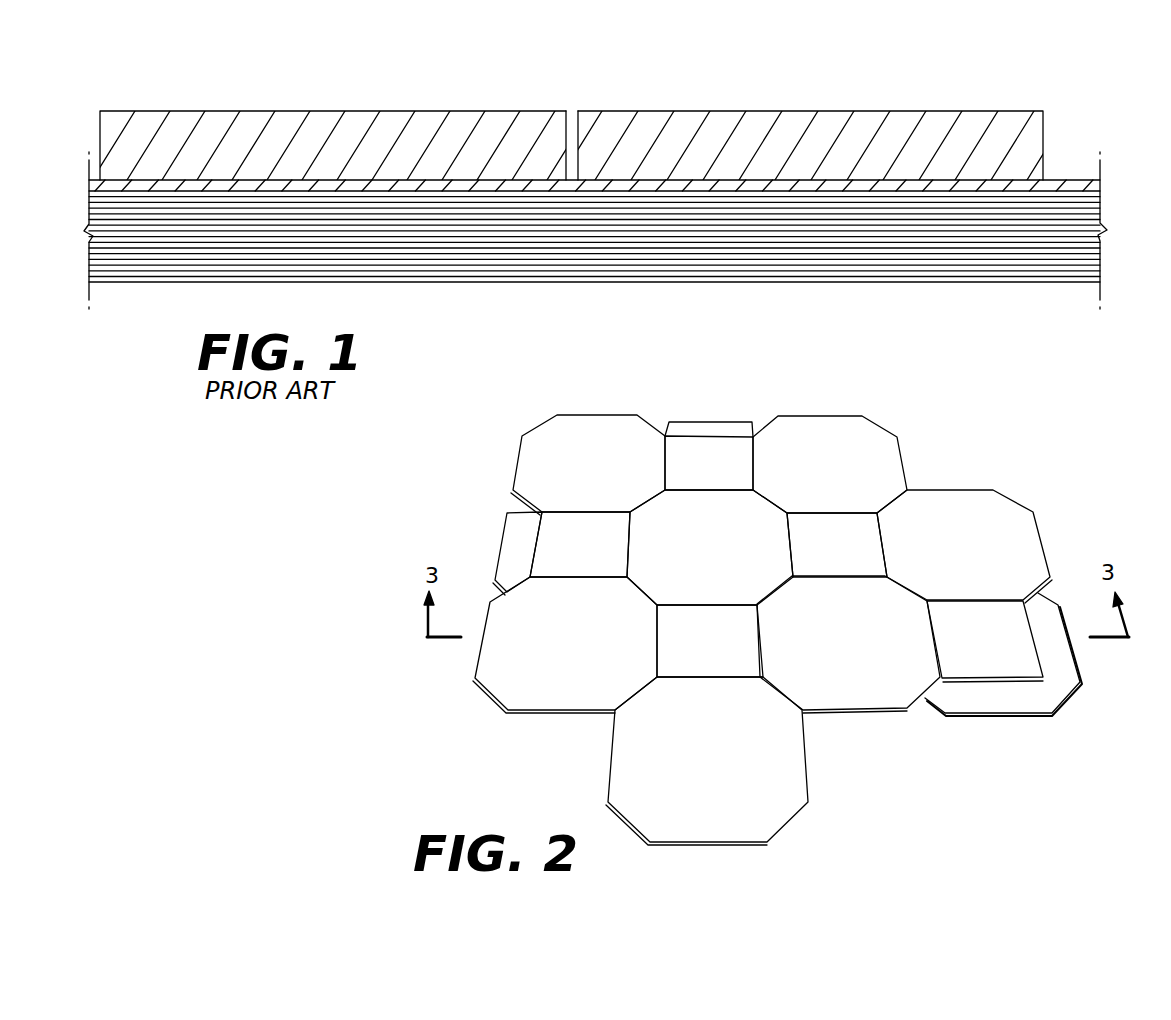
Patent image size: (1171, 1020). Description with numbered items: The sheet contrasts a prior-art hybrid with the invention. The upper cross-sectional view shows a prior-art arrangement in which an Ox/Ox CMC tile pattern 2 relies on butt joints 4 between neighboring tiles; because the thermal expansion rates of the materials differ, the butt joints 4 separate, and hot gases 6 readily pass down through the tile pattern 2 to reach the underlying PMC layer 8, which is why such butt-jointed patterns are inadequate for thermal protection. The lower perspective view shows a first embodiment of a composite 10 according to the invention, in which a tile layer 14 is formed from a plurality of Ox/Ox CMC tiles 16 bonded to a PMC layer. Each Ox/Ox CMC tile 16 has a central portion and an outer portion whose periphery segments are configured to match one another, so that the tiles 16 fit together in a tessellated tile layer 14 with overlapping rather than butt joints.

In FIG. 1, the Ox/Ox CMC tile pattern 2 is at (766, 98).
In FIG. 1, the butt joint 4 is at (573, 150).
In FIG. 1, the hot gases 6 is at (545, 50).
In FIG. 1, the PMC layer 8 is at (1068, 220).
In FIG. 2, the composite 10 is at (755, 607).
In FIG. 2, the tile layer 14 is at (821, 405).
In FIG. 2, the Ox/Ox CMC tile 16 is at (592, 452).